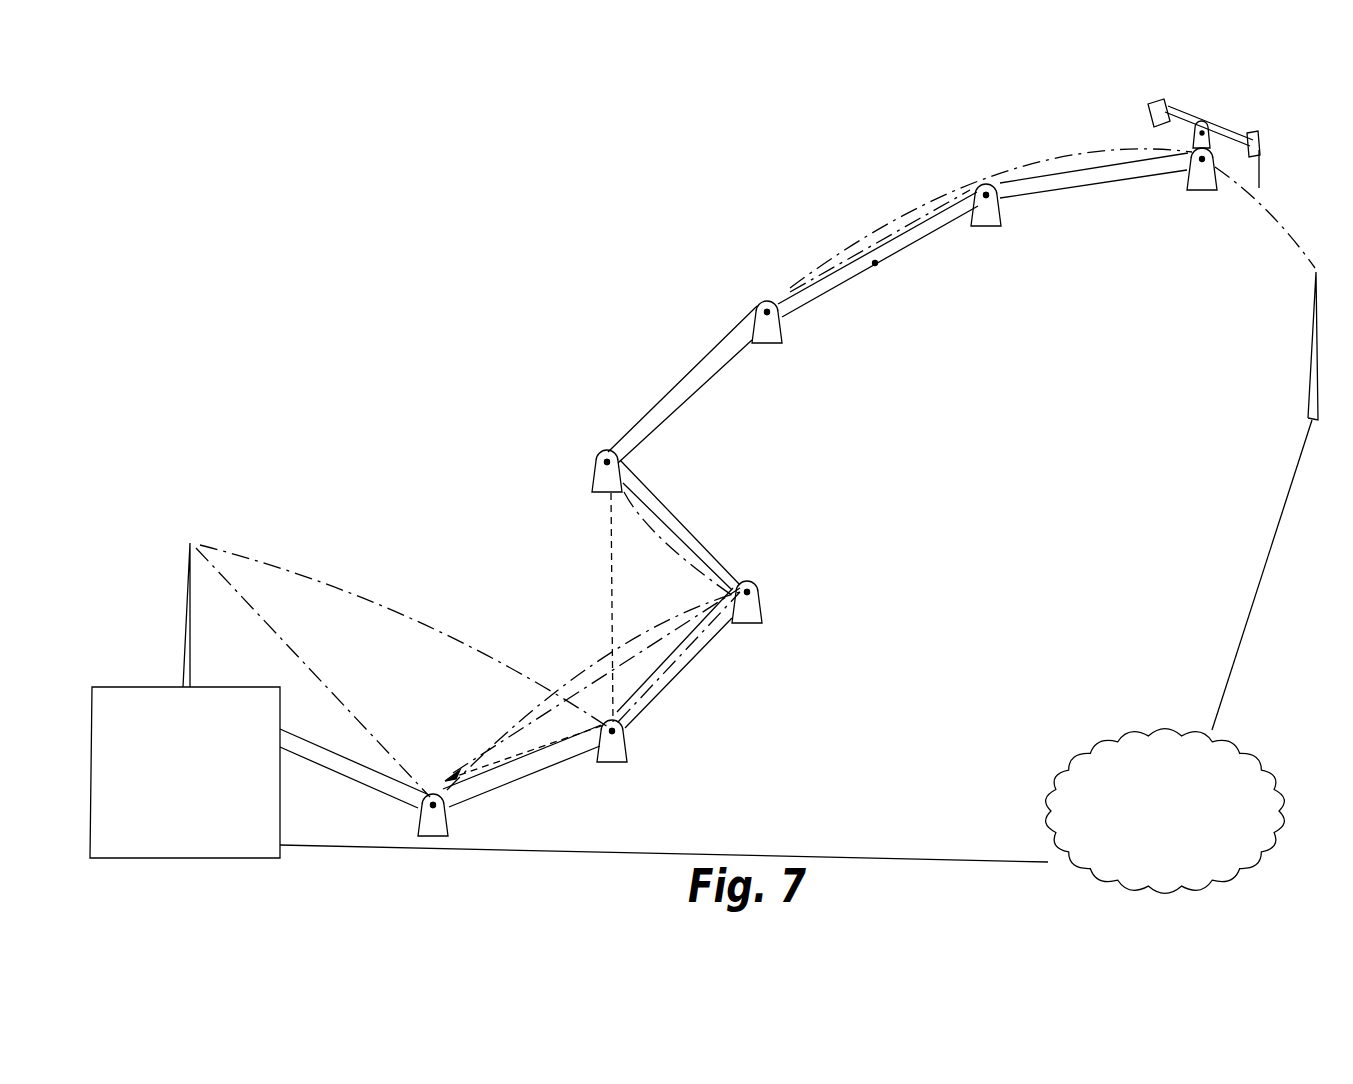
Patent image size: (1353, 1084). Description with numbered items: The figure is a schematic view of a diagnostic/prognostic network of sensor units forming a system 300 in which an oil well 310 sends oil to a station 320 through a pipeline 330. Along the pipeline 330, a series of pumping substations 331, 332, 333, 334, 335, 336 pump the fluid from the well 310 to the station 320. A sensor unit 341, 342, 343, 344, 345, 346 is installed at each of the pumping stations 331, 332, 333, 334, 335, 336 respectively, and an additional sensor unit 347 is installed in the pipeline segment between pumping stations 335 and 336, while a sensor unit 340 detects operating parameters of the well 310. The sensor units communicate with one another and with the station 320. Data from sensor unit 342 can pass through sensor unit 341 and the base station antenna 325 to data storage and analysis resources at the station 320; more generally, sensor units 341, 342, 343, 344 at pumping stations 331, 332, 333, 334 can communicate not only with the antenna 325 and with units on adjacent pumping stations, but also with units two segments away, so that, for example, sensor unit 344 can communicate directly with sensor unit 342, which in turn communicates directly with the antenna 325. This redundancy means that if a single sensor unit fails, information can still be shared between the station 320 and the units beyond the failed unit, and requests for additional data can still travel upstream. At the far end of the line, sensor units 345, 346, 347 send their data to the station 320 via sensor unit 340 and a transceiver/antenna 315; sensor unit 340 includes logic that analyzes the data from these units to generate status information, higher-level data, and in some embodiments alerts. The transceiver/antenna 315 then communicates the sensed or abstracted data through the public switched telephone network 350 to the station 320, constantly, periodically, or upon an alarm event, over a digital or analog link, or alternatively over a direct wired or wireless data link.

The system 300 is at (368, 258).
The oil well 310 is at (1258, 135).
The transceiver/antenna 315 is at (1310, 386).
The station 320 is at (205, 795).
The antenna 325 is at (187, 655).
The pipeline 330 is at (500, 378).
The pumping substation 331 is at (418, 826).
The pumping substation 332 is at (601, 760).
The pumping substation 333 is at (763, 605).
The pumping substation 334 is at (593, 483).
The pumping substation 335 is at (783, 338).
The pumping substation 336 is at (1004, 212).
The sensor unit 340 is at (1203, 163).
The sensor unit 341 is at (434, 798).
The sensor unit 342 is at (611, 724).
The sensor unit 343 is at (750, 586).
The sensor unit 344 is at (604, 461).
The sensor unit 345 is at (765, 309).
The sensor unit 346 is at (985, 190).
The sensor unit 347 is at (878, 266).
The public switched telephone network (PSTN) 350 is at (1186, 850).